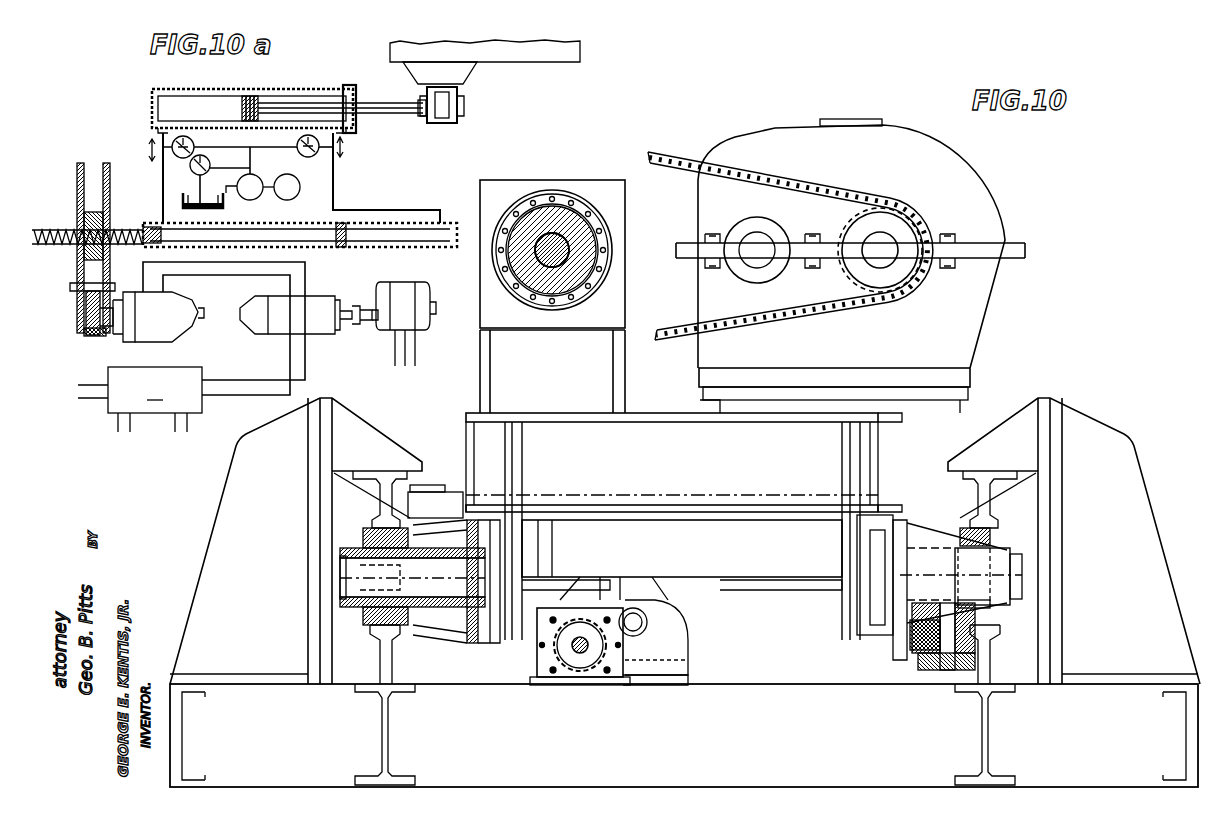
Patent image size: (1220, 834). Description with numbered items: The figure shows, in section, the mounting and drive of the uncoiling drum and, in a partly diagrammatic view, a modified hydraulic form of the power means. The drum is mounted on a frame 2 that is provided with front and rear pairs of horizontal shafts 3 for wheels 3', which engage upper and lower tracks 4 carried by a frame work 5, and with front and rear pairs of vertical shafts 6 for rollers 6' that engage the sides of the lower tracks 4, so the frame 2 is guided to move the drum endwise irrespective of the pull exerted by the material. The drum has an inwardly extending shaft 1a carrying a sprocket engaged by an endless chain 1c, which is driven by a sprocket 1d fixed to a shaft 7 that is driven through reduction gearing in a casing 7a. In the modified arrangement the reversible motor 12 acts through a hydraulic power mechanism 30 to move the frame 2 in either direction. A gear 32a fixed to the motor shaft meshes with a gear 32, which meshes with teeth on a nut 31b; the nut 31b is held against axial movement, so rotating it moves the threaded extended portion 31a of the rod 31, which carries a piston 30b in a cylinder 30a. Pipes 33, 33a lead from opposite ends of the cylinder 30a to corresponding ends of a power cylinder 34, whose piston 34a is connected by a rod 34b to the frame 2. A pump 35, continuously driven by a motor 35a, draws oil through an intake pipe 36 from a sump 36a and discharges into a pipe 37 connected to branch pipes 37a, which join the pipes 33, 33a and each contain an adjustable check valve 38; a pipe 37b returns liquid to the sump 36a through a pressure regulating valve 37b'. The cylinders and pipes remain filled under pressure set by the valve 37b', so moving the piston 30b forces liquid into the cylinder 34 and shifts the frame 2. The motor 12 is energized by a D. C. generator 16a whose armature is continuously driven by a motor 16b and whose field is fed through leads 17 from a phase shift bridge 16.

In FIG. 10, the inwardly extending shaft 1a is at (556, 232).
In FIG. 10, the endless chain 1c is at (812, 306).
In FIG. 10, the sprocket 1d is at (905, 215).
In FIG. 10A, the frame 2 is at (524, 58).
In FIG. 10, the horizontal shafts 3 is at (707, 573).
In FIG. 10, the wheels 3' is at (684, 593).
In FIG. 10, the tracks 4 is at (396, 636).
In FIG. 10, the frame work 5 is at (1104, 636).
In FIG. 10, the vertical shafts 6 is at (943, 657).
In FIG. 10, the rollers 6' is at (910, 636).
In FIG. 10, the shaft 7 is at (886, 262).
In FIG. 10, the casing 7a is at (983, 312).
In FIG. 10A, the motor 12 is at (188, 302).
In FIG. 10A, the phase shift bridge 16 is at (140, 399).
In FIG. 10A, the D. C. generator 16a is at (262, 326).
In FIG. 10A, the motor 16b is at (400, 284).
In FIG. 10A, the leads 17 is at (306, 366).
In FIG. 10A, the hydraulic power mechanism 30 is at (358, 179).
In FIG. 10A, the cylinder 30a is at (380, 247).
In FIG. 10A, the piston 30b is at (340, 250).
In FIG. 10A, the rod 31 is at (248, 244).
In FIG. 10A, the extended portion 31a is at (62, 250).
In FIG. 10A, the nut 31b is at (82, 185).
In FIG. 10A, the gear 32 is at (76, 293).
In FIG. 10A, the gear 32a is at (82, 340).
In FIG. 10A, the pipe 33 is at (163, 186).
In FIG. 10A, the pipe 33a is at (392, 199).
In FIG. 10A, the power cylinder 34 is at (222, 90).
In FIG. 10A, the piston 34a is at (262, 92).
In FIG. 10A, the rod 34b is at (386, 110).
In FIG. 10A, the pump 35 is at (252, 200).
In FIG. 10A, the motor 35a is at (292, 198).
In FIG. 10A, the intake pipe 36 is at (220, 212).
In FIG. 10A, the sump 36a is at (186, 212).
In FIG. 10A, the pipe 37 is at (251, 158).
In FIG. 10A, the branch pipes 37a is at (270, 146).
In FIG. 10A, the pipe 37b is at (183, 190).
In FIG. 10A, the pressure regulating valve 37b' is at (220, 162).
In FIG. 10A, the adjustable check valve 38 is at (310, 158).